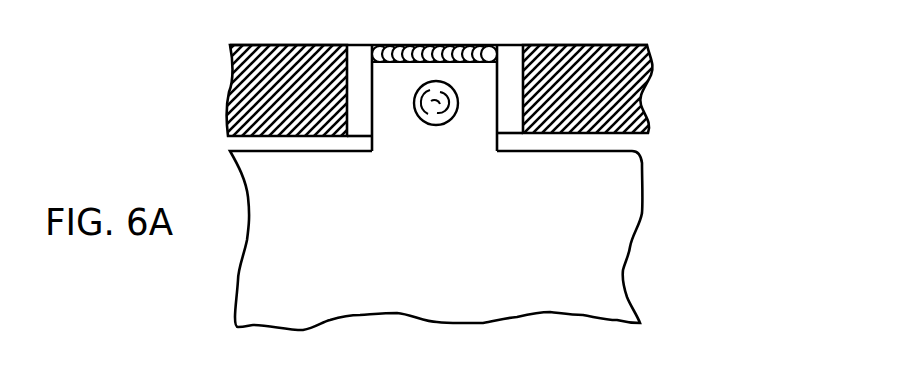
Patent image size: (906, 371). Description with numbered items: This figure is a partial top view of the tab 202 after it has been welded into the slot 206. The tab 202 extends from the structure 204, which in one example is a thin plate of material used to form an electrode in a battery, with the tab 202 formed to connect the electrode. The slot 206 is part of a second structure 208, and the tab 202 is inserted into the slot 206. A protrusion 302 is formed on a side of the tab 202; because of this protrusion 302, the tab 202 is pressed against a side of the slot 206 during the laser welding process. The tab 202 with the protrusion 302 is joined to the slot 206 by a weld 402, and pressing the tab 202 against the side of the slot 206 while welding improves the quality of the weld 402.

The tab 202 is at (499, 76).
The structure 204 is at (643, 177).
The slot 206 is at (356, 45).
The structure 208 is at (651, 70).
The protrusion 302 is at (437, 126).
The weld 402 is at (423, 44).